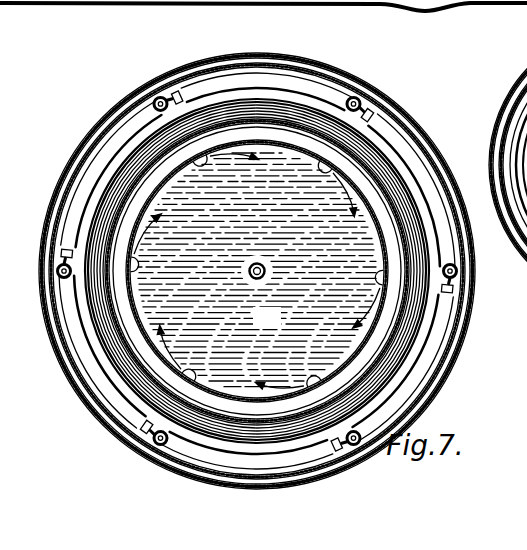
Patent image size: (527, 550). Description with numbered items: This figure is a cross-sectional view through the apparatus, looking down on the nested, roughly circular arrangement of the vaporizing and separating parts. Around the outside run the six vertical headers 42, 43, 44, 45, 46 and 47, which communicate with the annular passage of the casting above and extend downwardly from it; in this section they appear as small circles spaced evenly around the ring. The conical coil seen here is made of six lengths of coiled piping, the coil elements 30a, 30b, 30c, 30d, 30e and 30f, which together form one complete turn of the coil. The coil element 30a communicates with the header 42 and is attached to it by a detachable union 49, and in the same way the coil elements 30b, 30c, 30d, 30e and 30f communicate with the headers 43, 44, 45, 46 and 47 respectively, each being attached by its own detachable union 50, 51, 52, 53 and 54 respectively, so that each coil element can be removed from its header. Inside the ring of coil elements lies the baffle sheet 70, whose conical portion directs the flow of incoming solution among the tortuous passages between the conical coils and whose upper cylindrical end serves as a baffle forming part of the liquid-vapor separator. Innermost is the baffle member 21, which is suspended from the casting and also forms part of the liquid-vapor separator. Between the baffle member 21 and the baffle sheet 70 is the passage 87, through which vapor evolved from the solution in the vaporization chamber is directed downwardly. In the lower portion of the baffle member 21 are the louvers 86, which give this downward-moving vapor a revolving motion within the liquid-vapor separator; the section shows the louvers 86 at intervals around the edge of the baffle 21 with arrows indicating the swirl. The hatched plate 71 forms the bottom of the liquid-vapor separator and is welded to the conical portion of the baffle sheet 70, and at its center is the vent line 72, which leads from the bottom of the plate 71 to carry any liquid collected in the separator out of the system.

The baffle member 21 is at (380, 240).
The coil element 30a is at (440, 325).
The coil element 30b is at (402, 152).
The coil element 30c is at (224, 90).
The coil element 30d is at (87, 202).
The coil element 30e is at (115, 383).
The coil element 30f is at (293, 452).
The vertical header 42 is at (458, 270).
The vertical header 43 is at (360, 100).
The vertical header 44 is at (157, 97).
The vertical header 45 is at (56, 272).
The vertical header 46 is at (158, 452).
The vertical header 47 is at (362, 450).
The detachable union 49 is at (454, 288).
The detachable union 50 is at (373, 113).
The detachable union 51 is at (178, 91).
The detachable union 52 is at (62, 251).
The detachable union 53 is at (143, 432).
The detachable union 54 is at (339, 455).
The baffle sheet 70 is at (120, 330).
The plate 71 is at (267, 317).
The vent line 72 is at (258, 263).
The louvers 86 is at (378, 280).
The passage 87 is at (134, 201).